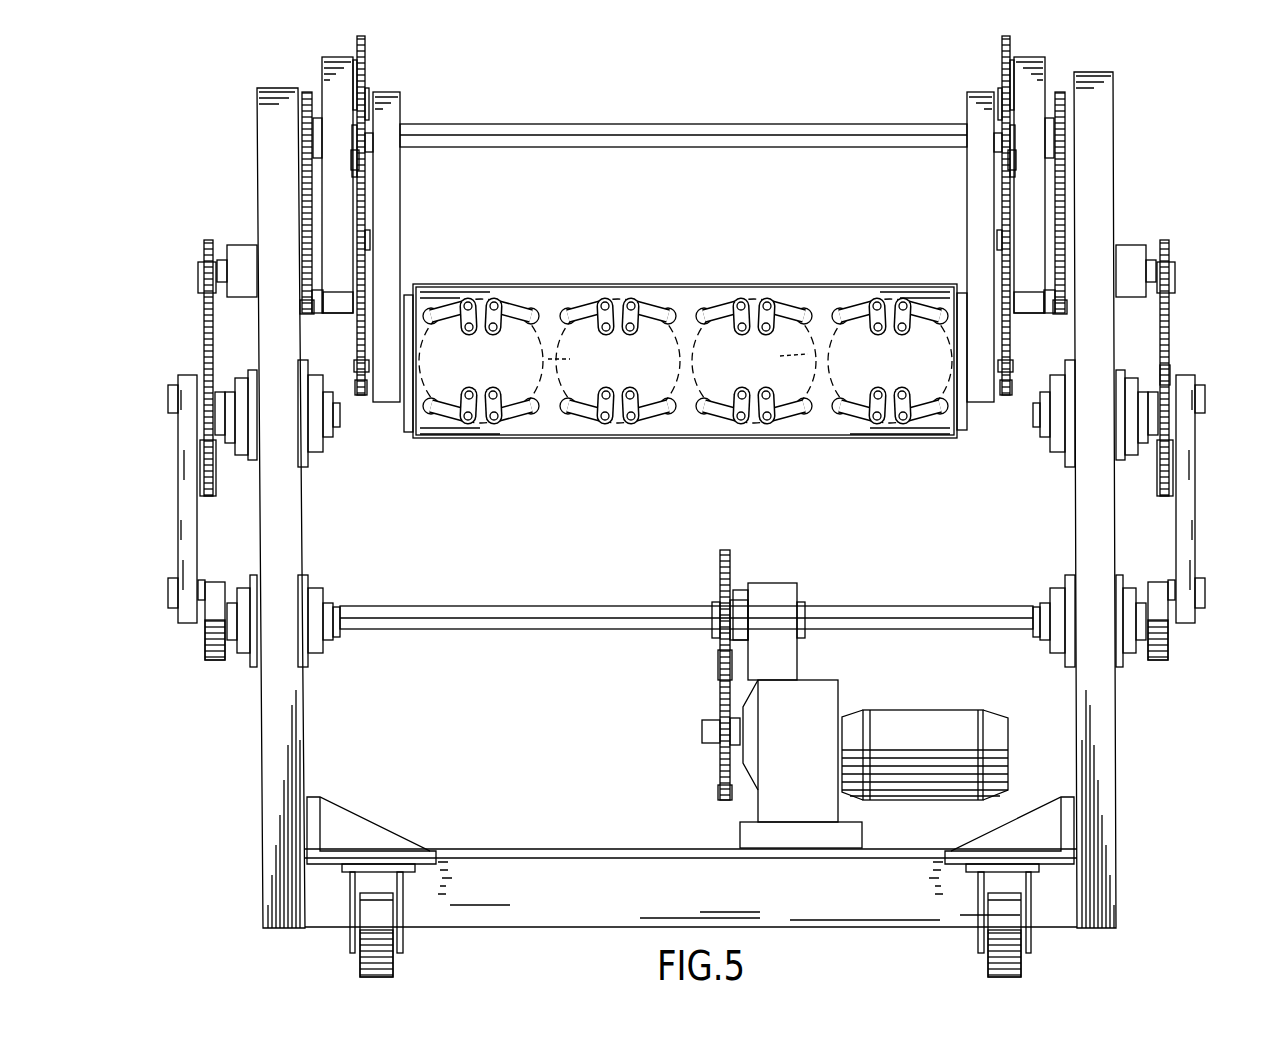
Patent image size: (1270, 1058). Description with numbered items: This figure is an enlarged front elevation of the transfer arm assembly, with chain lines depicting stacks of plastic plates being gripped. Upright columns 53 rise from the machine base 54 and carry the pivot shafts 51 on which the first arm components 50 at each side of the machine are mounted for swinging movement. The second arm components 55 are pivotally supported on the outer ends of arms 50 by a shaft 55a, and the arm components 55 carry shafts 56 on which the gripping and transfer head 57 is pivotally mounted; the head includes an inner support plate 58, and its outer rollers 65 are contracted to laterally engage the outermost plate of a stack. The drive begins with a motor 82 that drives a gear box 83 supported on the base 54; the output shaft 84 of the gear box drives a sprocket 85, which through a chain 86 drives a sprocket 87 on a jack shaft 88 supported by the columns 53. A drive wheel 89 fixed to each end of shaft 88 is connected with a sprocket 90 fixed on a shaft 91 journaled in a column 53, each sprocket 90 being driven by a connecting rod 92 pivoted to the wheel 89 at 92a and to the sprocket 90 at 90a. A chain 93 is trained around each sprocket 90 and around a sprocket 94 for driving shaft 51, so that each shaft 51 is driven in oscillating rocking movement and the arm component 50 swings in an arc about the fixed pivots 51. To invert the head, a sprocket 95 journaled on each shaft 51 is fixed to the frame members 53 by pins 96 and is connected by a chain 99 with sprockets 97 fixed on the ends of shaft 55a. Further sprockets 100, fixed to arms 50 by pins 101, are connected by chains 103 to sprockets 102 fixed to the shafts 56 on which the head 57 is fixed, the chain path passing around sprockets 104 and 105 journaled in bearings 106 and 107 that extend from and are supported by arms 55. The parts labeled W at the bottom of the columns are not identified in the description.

The first arm components 50 is at (328, 180).
The pivot shafts 51 is at (688, 318).
The upright frame portions or columns 53 is at (292, 752).
The machine base 54 is at (1062, 895).
The second arm components 55 is at (395, 222).
The shaft 55a is at (790, 130).
The shafts 56 is at (362, 366).
The gripping and transfer head 57 is at (521, 283).
The inner support plate 58 is at (680, 294).
The outer rollers 65 is at (548, 298).
The motor 82 is at (920, 725).
The gear box 83 is at (812, 742).
The output shaft 84 is at (706, 743).
The sprocket 85 is at (722, 802).
The chain 86 is at (722, 664).
The sprocket 87 is at (718, 550).
The jack shaft 88 is at (938, 606).
The drive wheel 89 is at (216, 662).
The sprocket 90 is at (212, 494).
The pivot 90a is at (1165, 372).
The shaft 91 is at (230, 432).
The connecting rod 92 is at (186, 490).
The pivot 92a is at (207, 580).
The chain 93 is at (205, 332).
The sprocket 94 is at (1164, 232).
The sprocket 95 is at (306, 320).
The pins 96 is at (304, 300).
The sprockets 97 is at (1112, 62).
The chain 99 is at (305, 214).
The sprockets 100 is at (368, 148).
The pins 101 is at (358, 176).
The sprockets 102 is at (363, 398).
The chains 103 is at (367, 240).
The sprocket 104 is at (366, 96).
The sprocket 105 is at (367, 45).
The bearing 106 is at (350, 88).
The bearing 107 is at (352, 60).
The wheel W is at (360, 959).